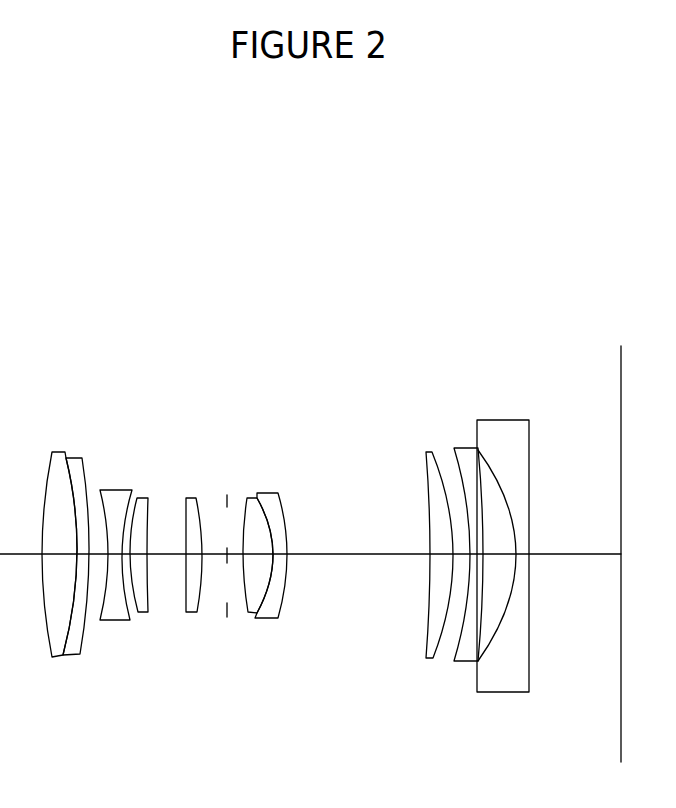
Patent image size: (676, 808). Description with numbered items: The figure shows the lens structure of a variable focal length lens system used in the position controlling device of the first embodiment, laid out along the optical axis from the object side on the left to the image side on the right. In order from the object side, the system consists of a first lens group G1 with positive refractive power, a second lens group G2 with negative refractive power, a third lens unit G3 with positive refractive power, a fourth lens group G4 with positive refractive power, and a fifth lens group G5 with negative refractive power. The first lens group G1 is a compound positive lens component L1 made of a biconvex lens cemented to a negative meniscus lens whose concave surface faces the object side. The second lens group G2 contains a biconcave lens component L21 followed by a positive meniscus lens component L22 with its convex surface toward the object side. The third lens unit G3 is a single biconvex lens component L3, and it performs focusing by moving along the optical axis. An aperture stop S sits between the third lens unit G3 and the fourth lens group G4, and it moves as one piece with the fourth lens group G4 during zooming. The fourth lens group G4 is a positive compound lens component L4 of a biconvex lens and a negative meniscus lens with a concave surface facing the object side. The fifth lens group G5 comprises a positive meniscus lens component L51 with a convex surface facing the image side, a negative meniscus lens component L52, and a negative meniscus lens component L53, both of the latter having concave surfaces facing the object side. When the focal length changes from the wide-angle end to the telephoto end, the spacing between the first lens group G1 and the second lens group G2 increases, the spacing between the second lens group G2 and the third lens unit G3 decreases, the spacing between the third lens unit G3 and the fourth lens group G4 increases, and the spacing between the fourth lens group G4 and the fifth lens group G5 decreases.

The compound positive lens component L1 is at (72, 453).
The biconcave lens component L21 is at (118, 490).
The positive meniscus lens component L22 is at (147, 498).
The biconvex lens component L3 is at (192, 498).
The positive compound lens component L4 is at (267, 493).
The positive meniscus lens component L51 is at (432, 452).
The negative meniscus lens component L52 is at (465, 448).
The negative meniscus lens component L53 is at (497, 420).
The aperture stop S is at (226, 569).
The first lens group G1 is at (66, 545).
The second lens group G2 is at (140, 545).
The third lens unit G3 is at (204, 555).
The fourth lens group G4 is at (267, 535).
The fifth lens group G5 is at (456, 549).